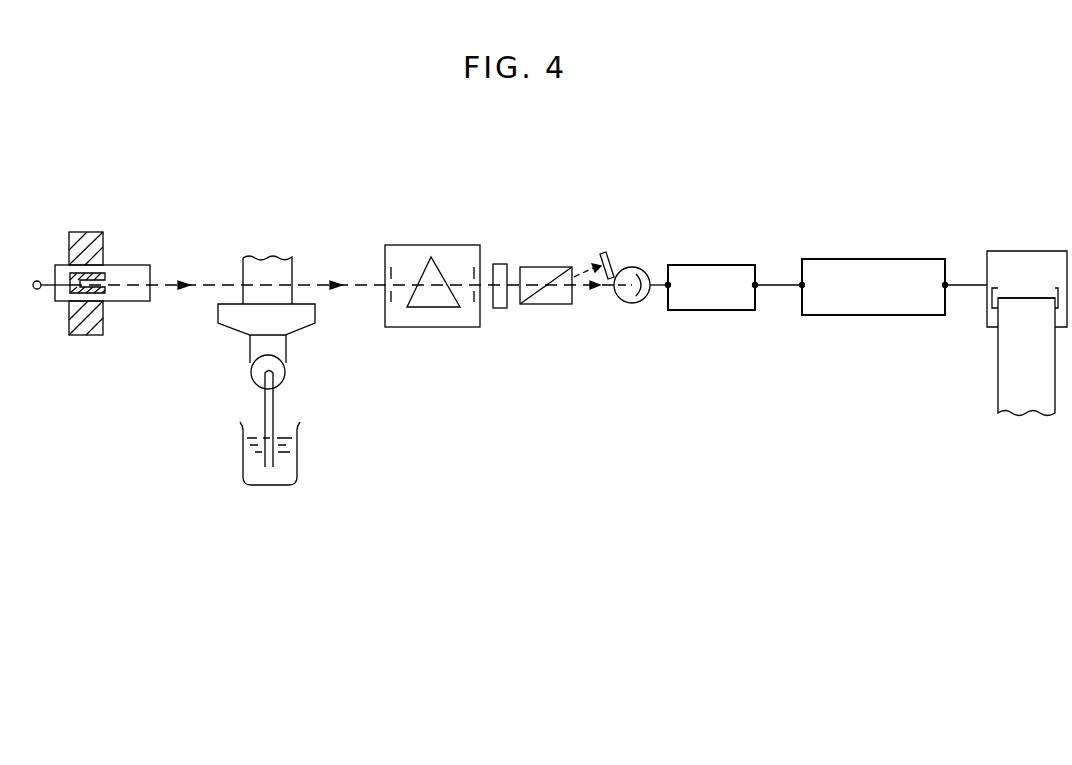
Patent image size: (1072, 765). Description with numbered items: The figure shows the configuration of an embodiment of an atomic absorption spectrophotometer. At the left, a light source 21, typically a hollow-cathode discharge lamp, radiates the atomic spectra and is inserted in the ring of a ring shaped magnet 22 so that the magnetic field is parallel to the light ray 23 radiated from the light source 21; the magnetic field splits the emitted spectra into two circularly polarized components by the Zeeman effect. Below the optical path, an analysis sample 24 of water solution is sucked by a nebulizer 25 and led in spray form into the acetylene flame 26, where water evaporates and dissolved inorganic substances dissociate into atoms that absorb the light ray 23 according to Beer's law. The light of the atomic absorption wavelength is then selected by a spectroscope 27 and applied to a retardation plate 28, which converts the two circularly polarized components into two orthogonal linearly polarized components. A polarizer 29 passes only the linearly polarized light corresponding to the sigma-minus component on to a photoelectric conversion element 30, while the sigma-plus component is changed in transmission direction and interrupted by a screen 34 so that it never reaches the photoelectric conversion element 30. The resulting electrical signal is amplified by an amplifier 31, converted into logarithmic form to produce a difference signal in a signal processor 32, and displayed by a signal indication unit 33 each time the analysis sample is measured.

The light source 21 is at (130, 265).
The ring shaped magnet 22 is at (87, 232).
The light ray 23 is at (184, 280).
The analysis sample 24 is at (297, 450).
The nebulizer 25 is at (285, 370).
The acetylene flame 26 is at (270, 259).
The spectroscope 27 is at (430, 245).
The retardation plate 28 is at (505, 264).
The polarizer 29 is at (548, 267).
The photoelectric conversion element 30 is at (632, 267).
The amplifier 31 is at (712, 265).
The signal processor 32 is at (871, 259).
The signal indication unit 33 is at (1022, 251).
The screen 34 is at (605, 253).